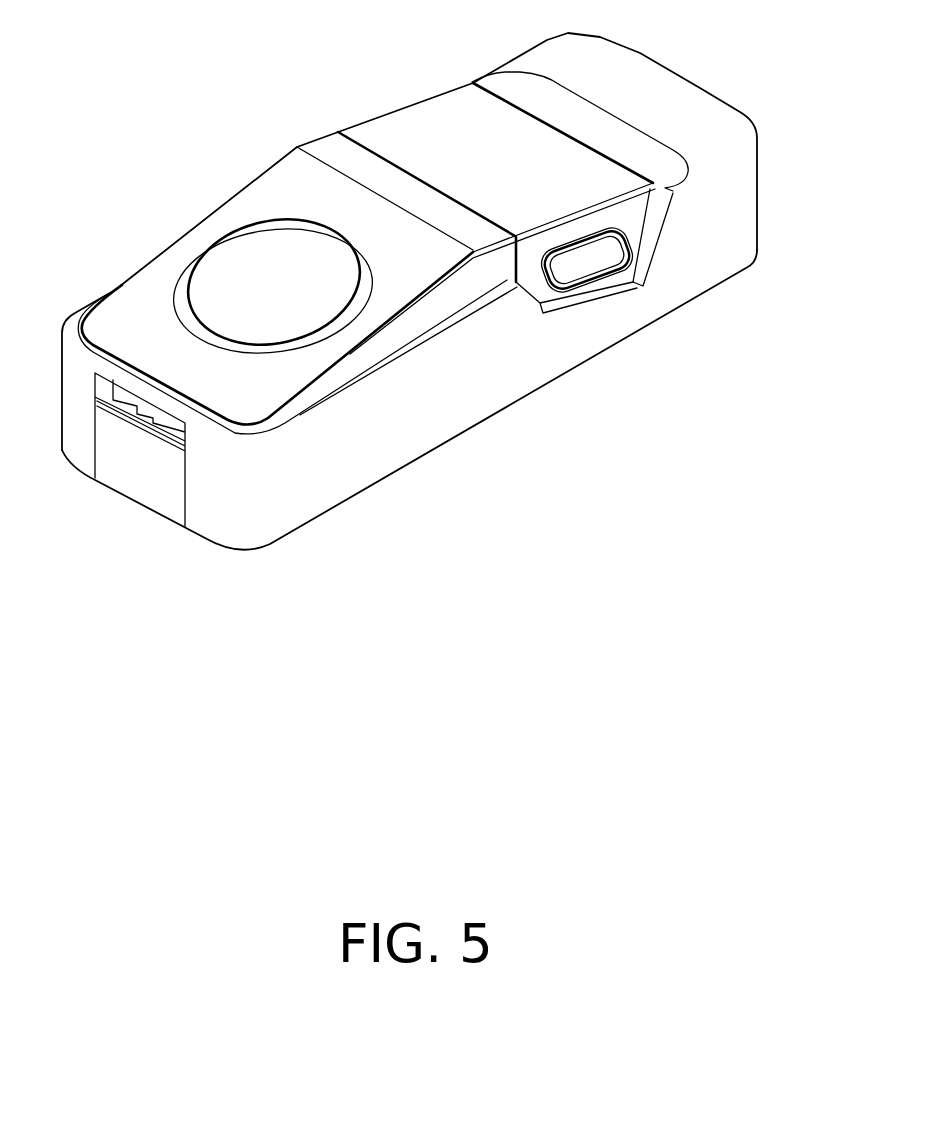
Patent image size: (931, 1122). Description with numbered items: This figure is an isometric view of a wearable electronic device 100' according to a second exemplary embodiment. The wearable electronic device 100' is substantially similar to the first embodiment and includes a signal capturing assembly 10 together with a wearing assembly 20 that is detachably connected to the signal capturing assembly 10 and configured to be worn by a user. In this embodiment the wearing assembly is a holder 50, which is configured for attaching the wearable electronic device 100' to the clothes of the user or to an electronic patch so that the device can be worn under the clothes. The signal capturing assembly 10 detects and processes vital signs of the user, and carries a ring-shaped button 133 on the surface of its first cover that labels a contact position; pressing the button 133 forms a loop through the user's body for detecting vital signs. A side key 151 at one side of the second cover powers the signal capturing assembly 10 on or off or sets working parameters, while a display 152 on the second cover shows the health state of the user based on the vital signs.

The wearable electronic device 100' is at (421, 275).
The signal capturing assembly 10 is at (290, 182).
The wearing assembly 20 is at (350, 472).
The holder 50 is at (660, 85).
The ring-shaped button 133 is at (195, 263).
The side key 151 is at (582, 273).
The display 152 is at (435, 128).